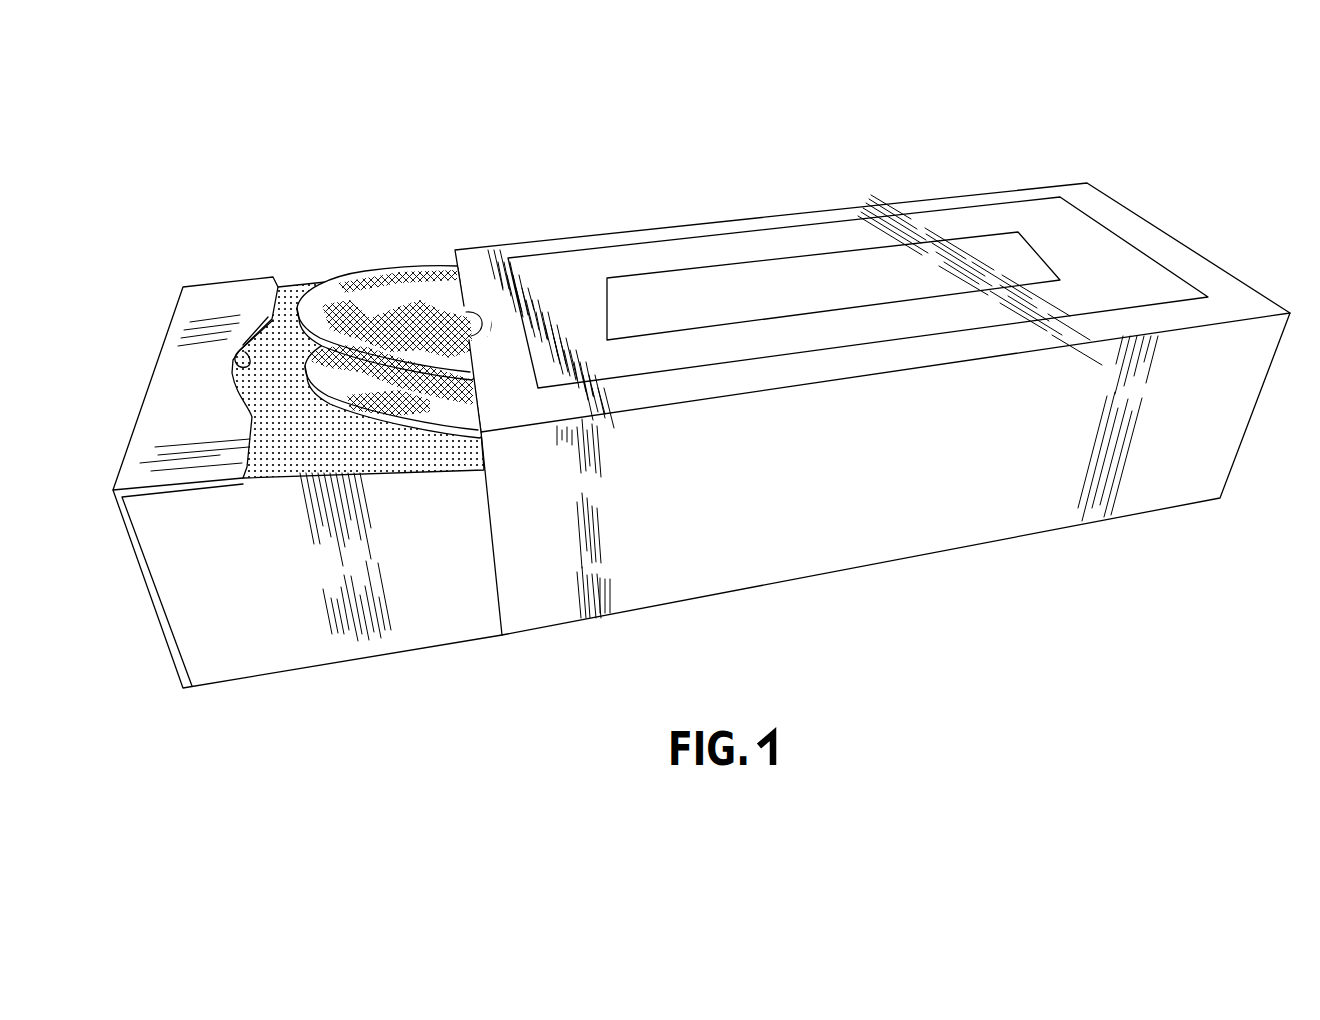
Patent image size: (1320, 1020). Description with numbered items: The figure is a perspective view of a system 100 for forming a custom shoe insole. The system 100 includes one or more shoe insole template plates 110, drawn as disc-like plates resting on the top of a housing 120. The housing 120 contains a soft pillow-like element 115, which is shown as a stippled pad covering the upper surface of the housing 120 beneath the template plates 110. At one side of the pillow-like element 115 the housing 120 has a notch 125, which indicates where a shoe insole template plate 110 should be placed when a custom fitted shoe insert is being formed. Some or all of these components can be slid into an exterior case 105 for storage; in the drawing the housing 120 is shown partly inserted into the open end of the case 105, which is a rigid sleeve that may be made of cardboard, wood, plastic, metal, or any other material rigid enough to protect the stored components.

The system 100 is at (622, 135).
The exterior case 105 is at (862, 237).
The shoe insole template plate 110 is at (368, 298).
The soft pillow-like element 115 is at (292, 303).
The housing 120 is at (225, 655).
The notch 125 is at (240, 343).